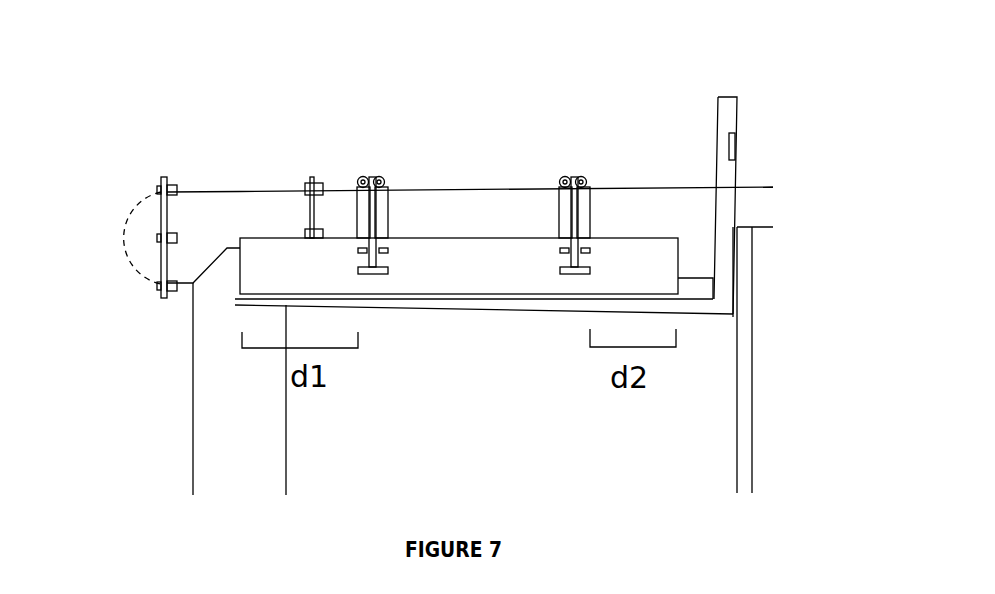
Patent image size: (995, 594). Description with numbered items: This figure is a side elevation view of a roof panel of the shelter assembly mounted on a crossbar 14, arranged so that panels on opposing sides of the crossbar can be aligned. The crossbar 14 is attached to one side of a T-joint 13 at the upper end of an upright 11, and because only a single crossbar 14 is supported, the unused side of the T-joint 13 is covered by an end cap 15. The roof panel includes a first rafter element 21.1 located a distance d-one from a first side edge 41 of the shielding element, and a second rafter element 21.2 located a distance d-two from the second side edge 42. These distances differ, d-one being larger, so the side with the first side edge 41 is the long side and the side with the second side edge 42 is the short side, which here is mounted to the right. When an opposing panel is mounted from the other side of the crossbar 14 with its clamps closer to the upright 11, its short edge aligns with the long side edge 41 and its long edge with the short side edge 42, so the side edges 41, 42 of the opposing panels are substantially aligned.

The first upright 11 is at (210, 452).
The T-joint 13 is at (222, 203).
The crossbar 14 is at (647, 200).
The end cap 15 is at (143, 213).
The first rafter element 21.1 is at (357, 180).
The second rafter element 21.2 is at (558, 180).
The first side edge 41 is at (240, 273).
The second side edge 42 is at (683, 263).